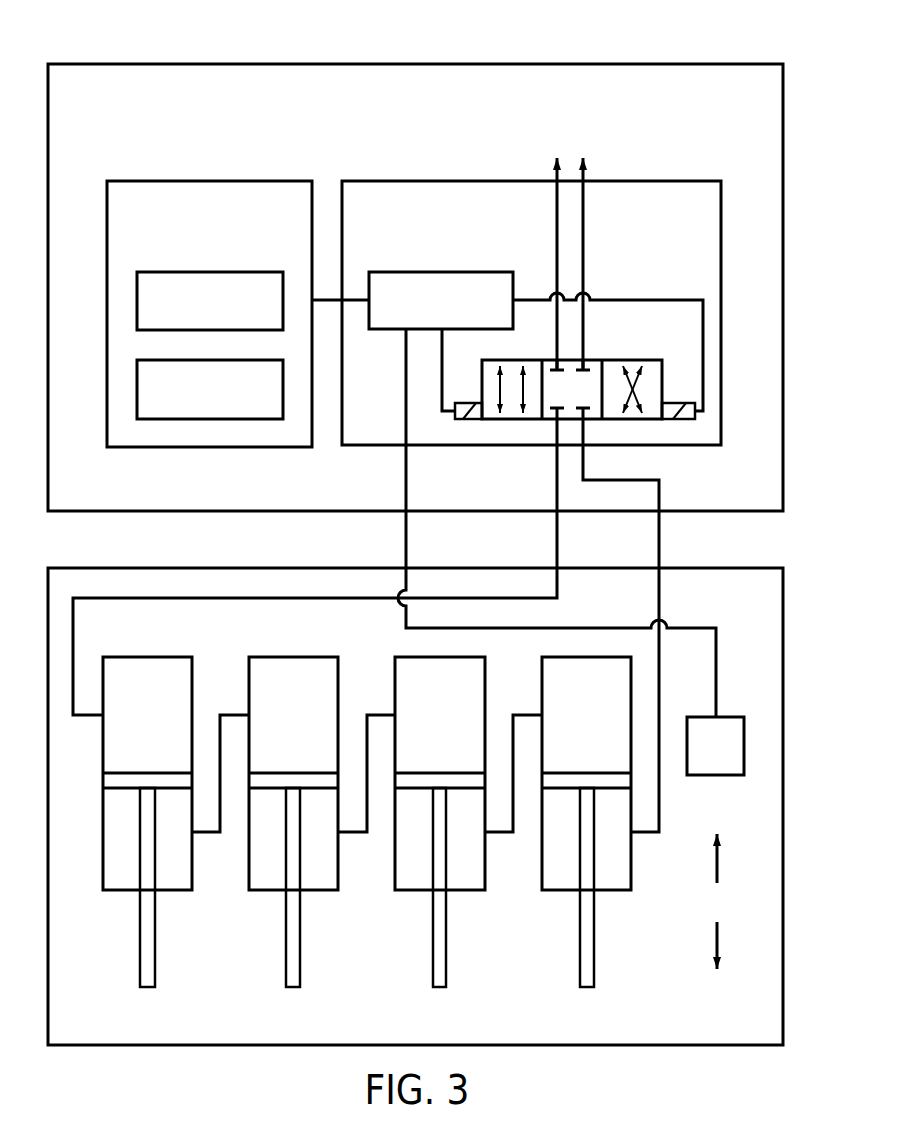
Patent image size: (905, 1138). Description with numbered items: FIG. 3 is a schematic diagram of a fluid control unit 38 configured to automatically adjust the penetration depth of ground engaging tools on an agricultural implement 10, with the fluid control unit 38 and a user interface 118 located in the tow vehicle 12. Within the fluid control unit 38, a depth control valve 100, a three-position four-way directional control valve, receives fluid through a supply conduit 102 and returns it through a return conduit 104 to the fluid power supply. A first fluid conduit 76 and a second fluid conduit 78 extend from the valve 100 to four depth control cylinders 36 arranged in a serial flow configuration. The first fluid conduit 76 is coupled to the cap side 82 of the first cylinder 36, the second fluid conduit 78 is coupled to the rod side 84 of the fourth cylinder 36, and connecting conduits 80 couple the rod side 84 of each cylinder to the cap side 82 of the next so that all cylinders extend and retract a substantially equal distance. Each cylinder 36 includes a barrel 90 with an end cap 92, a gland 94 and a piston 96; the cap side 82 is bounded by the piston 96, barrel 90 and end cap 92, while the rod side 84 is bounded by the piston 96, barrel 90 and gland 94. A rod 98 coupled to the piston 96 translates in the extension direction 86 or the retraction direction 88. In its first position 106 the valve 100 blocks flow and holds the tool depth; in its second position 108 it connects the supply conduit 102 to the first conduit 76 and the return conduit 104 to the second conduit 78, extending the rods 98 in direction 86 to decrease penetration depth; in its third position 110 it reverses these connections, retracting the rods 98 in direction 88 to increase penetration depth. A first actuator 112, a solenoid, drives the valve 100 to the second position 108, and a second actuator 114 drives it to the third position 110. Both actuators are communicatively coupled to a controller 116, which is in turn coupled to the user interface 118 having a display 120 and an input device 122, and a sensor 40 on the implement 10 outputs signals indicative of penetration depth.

The agricultural implement 10 is at (48, 803).
The tow vehicle 12 is at (418, 64).
The depth control cylinder 36 is at (213, 978).
The fluid control unit 38 is at (690, 181).
The sensor 40 is at (744, 745).
The first fluid conduit 76 is at (315, 598).
The second fluid conduit 78 is at (659, 548).
The connecting conduit 80 is at (207, 832).
The cap side 82 is at (162, 708).
The rod side 84 is at (118, 845).
The extension direction 86 is at (717, 940).
The retraction direction 88 is at (717, 860).
The barrel 90 is at (249, 675).
The end cap 92 is at (145, 657).
The gland 94 is at (265, 890).
The piston 96 is at (147, 773).
The rod 98 is at (140, 957).
The depth control valve 100 is at (666, 343).
The supply conduit 102 is at (557, 222).
The return conduit 104 is at (583, 262).
The first position 106 is at (590, 360).
The second position 108 is at (512, 360).
The third position 110 is at (630, 419).
The first actuator 112 is at (468, 419).
The second actuator 114 is at (695, 419).
The controller 116 is at (443, 272).
The user interface 118 is at (207, 181).
The display 120 is at (137, 300).
The input device 122 is at (137, 388).